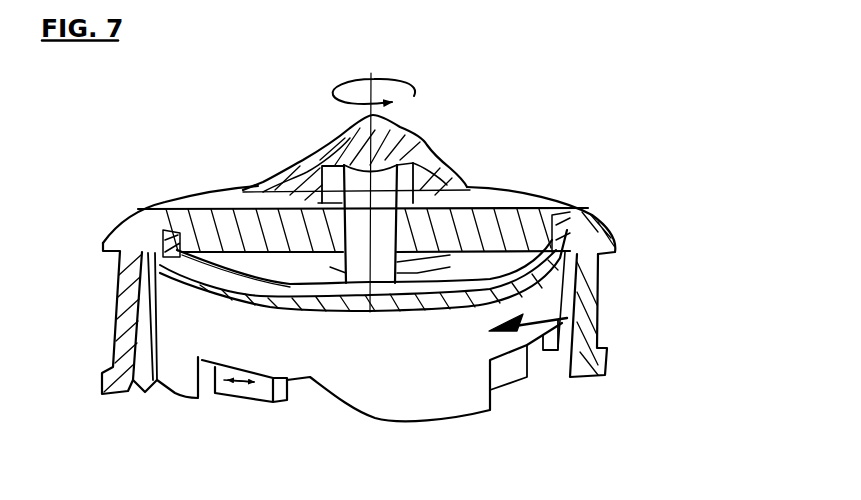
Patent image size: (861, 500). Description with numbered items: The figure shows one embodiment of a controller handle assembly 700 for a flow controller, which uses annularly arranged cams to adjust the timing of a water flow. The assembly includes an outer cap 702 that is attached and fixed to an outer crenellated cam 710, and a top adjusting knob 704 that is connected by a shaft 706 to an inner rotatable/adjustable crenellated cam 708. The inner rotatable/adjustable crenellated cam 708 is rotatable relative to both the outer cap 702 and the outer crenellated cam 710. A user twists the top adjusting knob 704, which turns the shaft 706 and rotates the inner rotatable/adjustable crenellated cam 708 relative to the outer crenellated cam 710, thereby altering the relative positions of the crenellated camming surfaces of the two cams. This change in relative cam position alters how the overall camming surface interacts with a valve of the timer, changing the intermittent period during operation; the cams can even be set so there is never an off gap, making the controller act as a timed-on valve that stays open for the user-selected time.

The controller handle assembly 700 is at (358, 433).
The outer cap 702 is at (599, 285).
The top adjusting knob 704 is at (410, 126).
The shaft 706 is at (388, 205).
The inner rotatable/adjustable crenellated cam 708 is at (511, 259).
The outer crenellated cam 710 is at (567, 318).